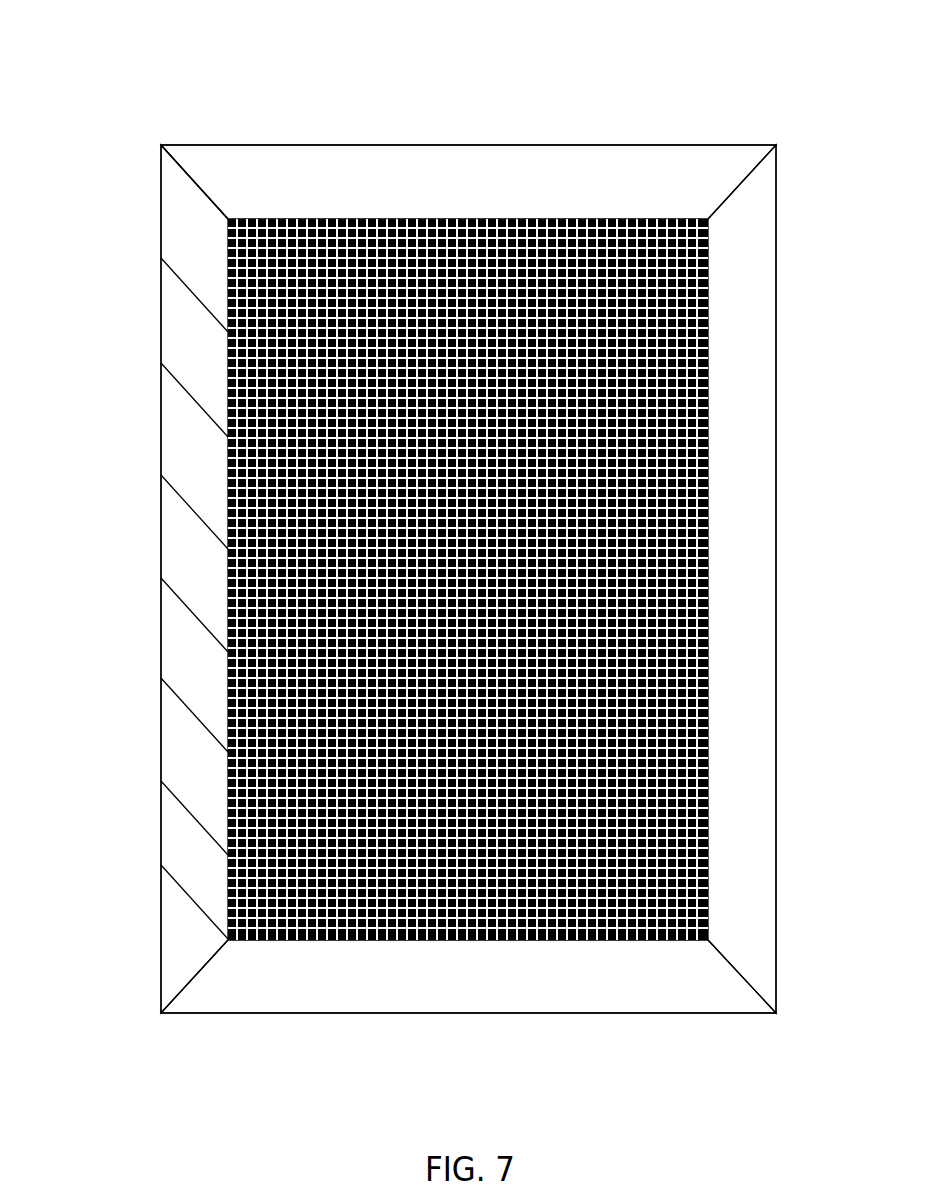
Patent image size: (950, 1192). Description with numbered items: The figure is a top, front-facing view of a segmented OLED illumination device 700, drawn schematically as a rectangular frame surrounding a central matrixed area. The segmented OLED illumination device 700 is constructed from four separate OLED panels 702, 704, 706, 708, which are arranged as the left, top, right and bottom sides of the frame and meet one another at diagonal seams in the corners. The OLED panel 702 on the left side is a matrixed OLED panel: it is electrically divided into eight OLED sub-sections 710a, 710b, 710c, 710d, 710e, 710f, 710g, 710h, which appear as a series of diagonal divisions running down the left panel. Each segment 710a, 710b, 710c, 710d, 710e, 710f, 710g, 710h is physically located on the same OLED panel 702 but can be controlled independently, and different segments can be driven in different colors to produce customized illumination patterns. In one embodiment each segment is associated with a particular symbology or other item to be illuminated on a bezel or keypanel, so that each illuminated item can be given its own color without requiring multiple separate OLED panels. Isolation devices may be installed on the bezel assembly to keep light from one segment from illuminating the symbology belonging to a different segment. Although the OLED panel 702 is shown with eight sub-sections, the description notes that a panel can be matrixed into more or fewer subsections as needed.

The segmented OLED illumination device 700 is at (450, 557).
The OLED panel 702 is at (153, 983).
The OLED panel 704 is at (460, 137).
The OLED panel 706 is at (768, 534).
The OLED panel 708 is at (436, 1005).
The OLED sub-section 710a is at (153, 167).
The OLED sub-section 710b is at (153, 287).
The OLED sub-section 710c is at (153, 398).
The OLED sub-section 710d is at (153, 512).
The OLED sub-section 710e is at (153, 602).
The OLED sub-section 710f is at (153, 715).
The OLED sub-section 710g is at (153, 812).
The OLED sub-section 710h is at (153, 907).